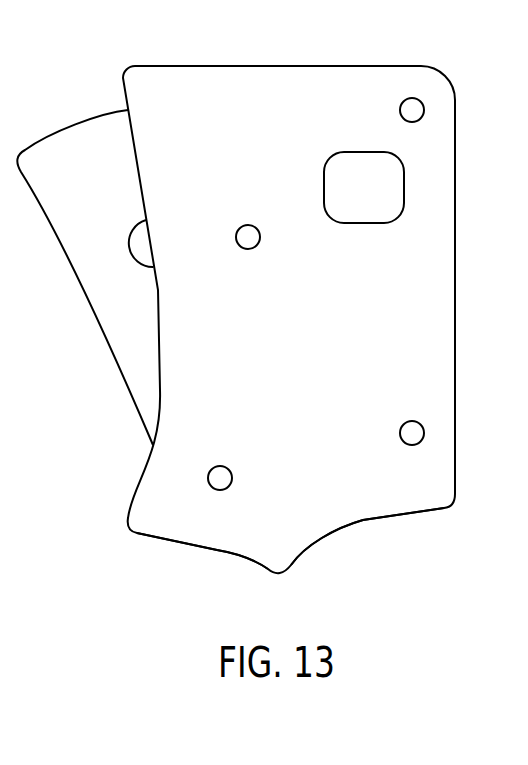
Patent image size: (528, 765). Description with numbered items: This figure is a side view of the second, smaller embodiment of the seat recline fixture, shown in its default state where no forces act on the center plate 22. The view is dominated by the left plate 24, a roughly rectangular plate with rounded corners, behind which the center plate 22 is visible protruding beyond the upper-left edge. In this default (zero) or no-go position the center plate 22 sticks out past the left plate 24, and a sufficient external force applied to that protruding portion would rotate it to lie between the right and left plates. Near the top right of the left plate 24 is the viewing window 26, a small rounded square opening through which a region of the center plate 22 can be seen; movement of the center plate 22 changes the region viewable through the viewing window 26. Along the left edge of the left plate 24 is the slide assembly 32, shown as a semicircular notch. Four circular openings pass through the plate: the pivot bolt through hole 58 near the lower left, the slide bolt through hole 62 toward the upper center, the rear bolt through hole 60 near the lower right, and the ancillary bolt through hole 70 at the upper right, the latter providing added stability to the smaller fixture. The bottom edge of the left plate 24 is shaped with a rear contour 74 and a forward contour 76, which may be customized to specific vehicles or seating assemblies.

The center plate 22 is at (79, 143).
The left plate 24 is at (228, 83).
The viewing window 26 is at (390, 185).
The slide assembly 32 is at (143, 238).
The pivot bolt through hole 58 is at (222, 472).
The rear bolt through hole 60 is at (410, 432).
The slide bolt through hole 62 is at (245, 235).
The ancillary bolt through hole 70 is at (416, 110).
The rear contour 74 is at (395, 528).
The forward contour 76 is at (210, 556).